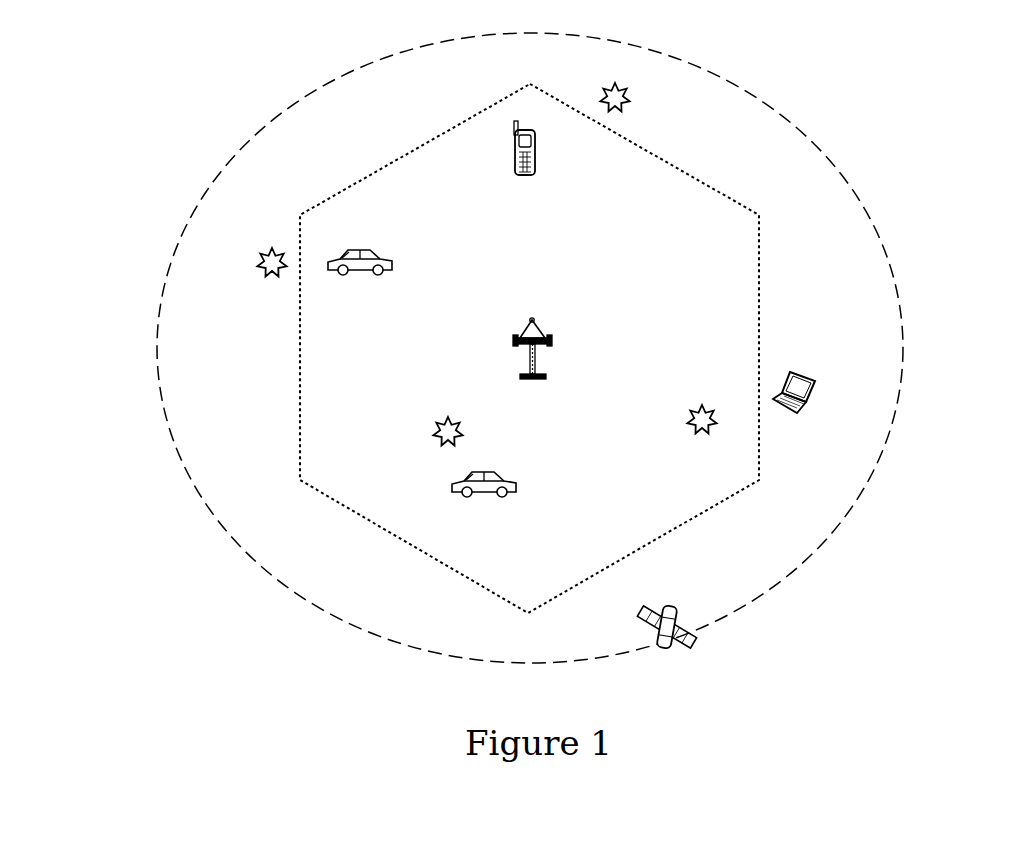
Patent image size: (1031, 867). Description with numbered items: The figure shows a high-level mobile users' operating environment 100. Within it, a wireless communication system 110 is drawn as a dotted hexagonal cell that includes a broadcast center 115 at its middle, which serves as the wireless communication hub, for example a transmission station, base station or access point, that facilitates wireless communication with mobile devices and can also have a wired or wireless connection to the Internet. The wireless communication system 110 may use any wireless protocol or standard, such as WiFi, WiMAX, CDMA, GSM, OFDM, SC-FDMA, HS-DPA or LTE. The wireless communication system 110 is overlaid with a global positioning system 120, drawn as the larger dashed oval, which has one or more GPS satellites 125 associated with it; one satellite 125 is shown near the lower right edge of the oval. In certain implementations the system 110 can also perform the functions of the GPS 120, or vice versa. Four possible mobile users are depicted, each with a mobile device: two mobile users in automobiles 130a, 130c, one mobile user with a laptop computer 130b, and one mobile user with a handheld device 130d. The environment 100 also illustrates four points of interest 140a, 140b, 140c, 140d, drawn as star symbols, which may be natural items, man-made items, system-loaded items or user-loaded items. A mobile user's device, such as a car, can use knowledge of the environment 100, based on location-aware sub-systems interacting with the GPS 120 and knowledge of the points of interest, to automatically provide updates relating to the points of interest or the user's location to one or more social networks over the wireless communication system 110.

The mobile users' operating environment 100 is at (948, 86).
The wireless communication system 110 is at (418, 551).
The broadcast center 115 is at (536, 328).
The global positioning system 120 is at (782, 583).
The GPS satellite 125 is at (670, 652).
The mobile device in automobile 130a is at (356, 272).
The laptop computer 130b is at (790, 414).
The mobile device in automobile 130c is at (453, 488).
The handheld device 130d is at (537, 158).
The point of interest 140a is at (272, 278).
The point of interest 140b is at (702, 435).
The point of interest 140c is at (466, 428).
The point of interest 140d is at (631, 92).